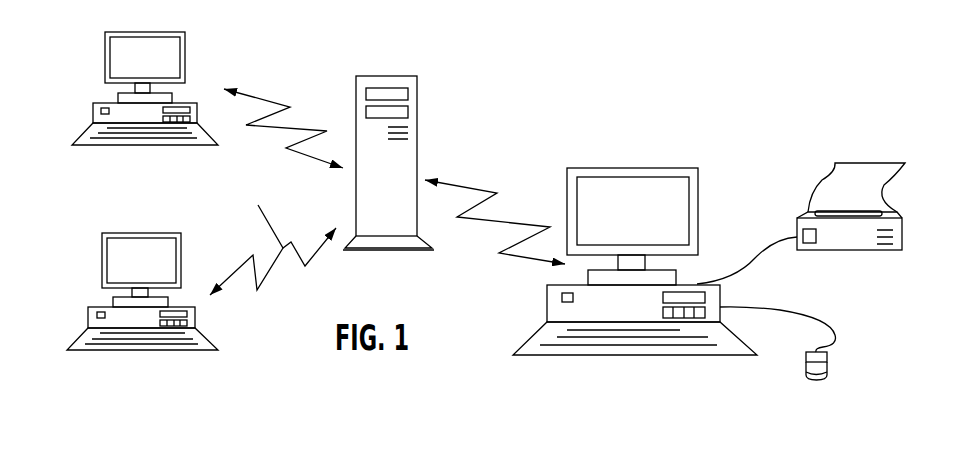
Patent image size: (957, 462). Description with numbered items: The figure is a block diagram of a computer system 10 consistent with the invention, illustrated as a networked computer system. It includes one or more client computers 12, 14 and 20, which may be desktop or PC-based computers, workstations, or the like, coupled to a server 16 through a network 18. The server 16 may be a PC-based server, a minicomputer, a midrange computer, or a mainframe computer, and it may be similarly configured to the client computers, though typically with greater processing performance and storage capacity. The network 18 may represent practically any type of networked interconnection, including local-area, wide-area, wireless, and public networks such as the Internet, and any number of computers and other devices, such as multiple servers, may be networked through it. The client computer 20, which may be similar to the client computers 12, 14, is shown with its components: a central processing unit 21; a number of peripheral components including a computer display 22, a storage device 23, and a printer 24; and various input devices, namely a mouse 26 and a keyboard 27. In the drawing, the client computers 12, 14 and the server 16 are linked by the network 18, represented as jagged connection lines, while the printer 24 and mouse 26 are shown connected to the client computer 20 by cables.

The computer system 10 is at (557, 81).
The client computer 12 is at (108, 48).
The client computer 14 is at (103, 238).
The server 16 is at (373, 75).
The network 18 is at (286, 150).
The client computer 20 is at (621, 256).
The central processing unit 21 is at (603, 310).
The computer display 22 is at (602, 168).
The storage device 23 is at (680, 318).
The printer 24 is at (812, 215).
The mouse 26 is at (826, 372).
The keyboard 27 is at (533, 352).